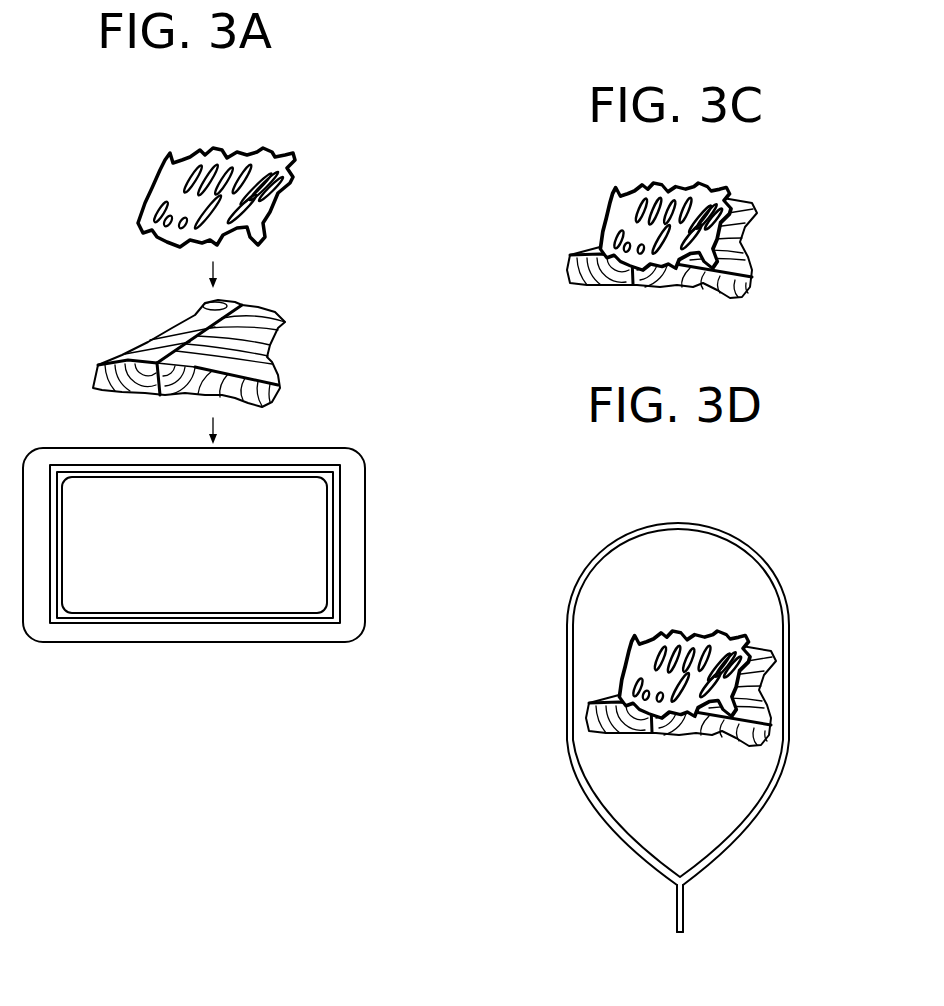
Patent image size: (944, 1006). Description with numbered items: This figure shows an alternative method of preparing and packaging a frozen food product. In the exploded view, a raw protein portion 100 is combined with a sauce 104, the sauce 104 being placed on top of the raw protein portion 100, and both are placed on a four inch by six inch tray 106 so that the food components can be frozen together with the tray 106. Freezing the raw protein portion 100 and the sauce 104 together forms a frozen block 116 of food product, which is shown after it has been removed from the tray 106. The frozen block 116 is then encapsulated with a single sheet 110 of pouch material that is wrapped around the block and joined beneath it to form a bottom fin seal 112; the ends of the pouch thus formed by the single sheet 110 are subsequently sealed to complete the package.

In FIG. 3A, the raw protein portion 100 is at (138, 342).
In FIG. 3A, the sauce 104 is at (153, 175).
In FIG. 3A, the tray 106 is at (365, 540).
In FIG. 3D, the single sheet of material 110 is at (594, 548).
In FIG. 3D, the bottom fin seal 112 is at (685, 908).
In FIG. 3C, the frozen block of food product 116 is at (595, 184).
In FIG. 3D, the frozen block of food product 116 is at (618, 625).